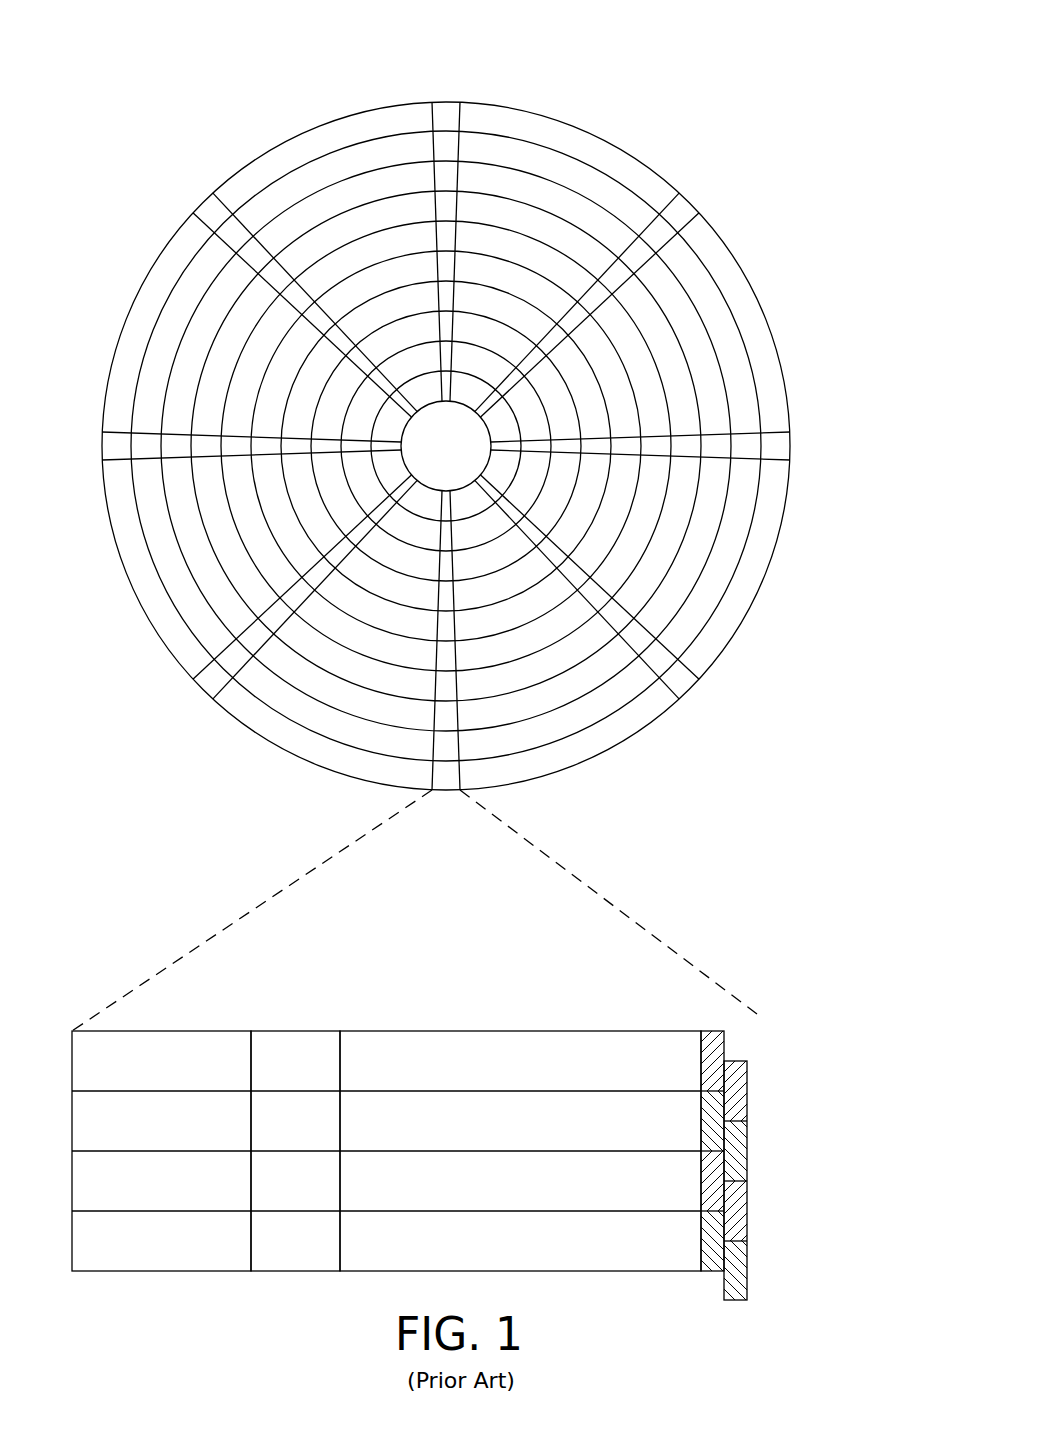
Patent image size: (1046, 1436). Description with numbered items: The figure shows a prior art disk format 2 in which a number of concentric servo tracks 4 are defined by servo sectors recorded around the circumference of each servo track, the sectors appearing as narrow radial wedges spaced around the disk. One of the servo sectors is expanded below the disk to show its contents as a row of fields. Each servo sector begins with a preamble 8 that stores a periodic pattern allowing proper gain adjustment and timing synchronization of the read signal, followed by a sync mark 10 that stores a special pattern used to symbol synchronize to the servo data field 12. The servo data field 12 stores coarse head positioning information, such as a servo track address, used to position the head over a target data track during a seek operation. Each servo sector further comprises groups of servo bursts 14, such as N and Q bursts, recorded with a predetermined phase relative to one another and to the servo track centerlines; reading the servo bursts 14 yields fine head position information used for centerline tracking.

The disk format 2 is at (194, 108).
The servo track 4 is at (588, 153).
The preamble 8 is at (170, 1030).
The sync mark 10 is at (299, 1030).
The servo data field 12 is at (508, 1030).
The servo bursts 14 is at (742, 1030).